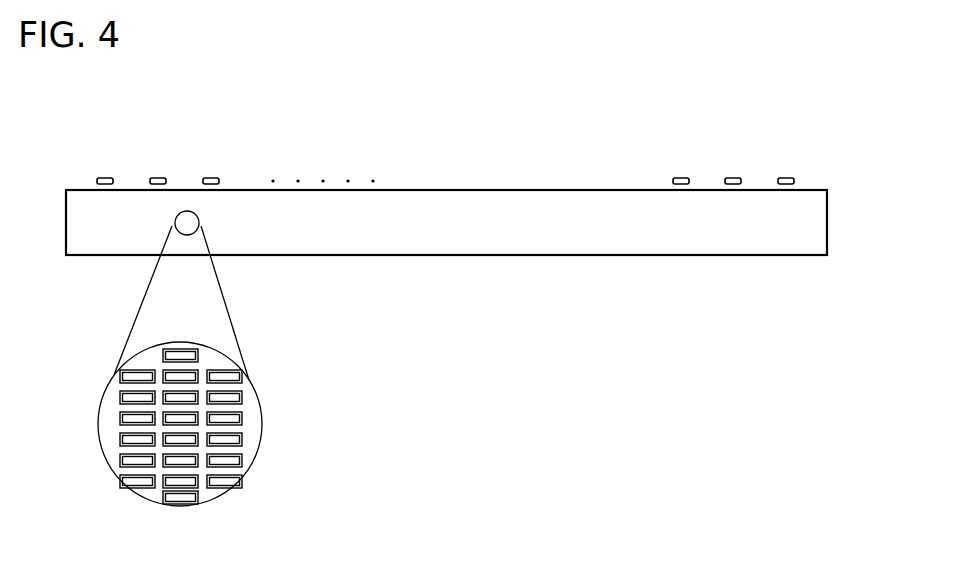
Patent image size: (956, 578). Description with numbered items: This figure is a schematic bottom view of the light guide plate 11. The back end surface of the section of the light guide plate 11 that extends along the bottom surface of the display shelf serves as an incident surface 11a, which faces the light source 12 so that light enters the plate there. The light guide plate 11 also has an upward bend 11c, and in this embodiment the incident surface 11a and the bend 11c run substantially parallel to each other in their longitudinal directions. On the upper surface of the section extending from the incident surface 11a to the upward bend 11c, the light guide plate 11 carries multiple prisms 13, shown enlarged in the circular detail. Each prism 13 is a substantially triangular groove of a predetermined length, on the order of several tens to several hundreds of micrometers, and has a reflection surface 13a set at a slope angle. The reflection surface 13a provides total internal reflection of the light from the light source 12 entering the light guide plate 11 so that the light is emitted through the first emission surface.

The light guide plate 11 is at (802, 205).
The incident surface 11a is at (83, 190).
The upward bend 11c is at (797, 255).
The light source 12 is at (800, 170).
The prisms 13 is at (243, 383).
The reflection surface 13a is at (226, 373).